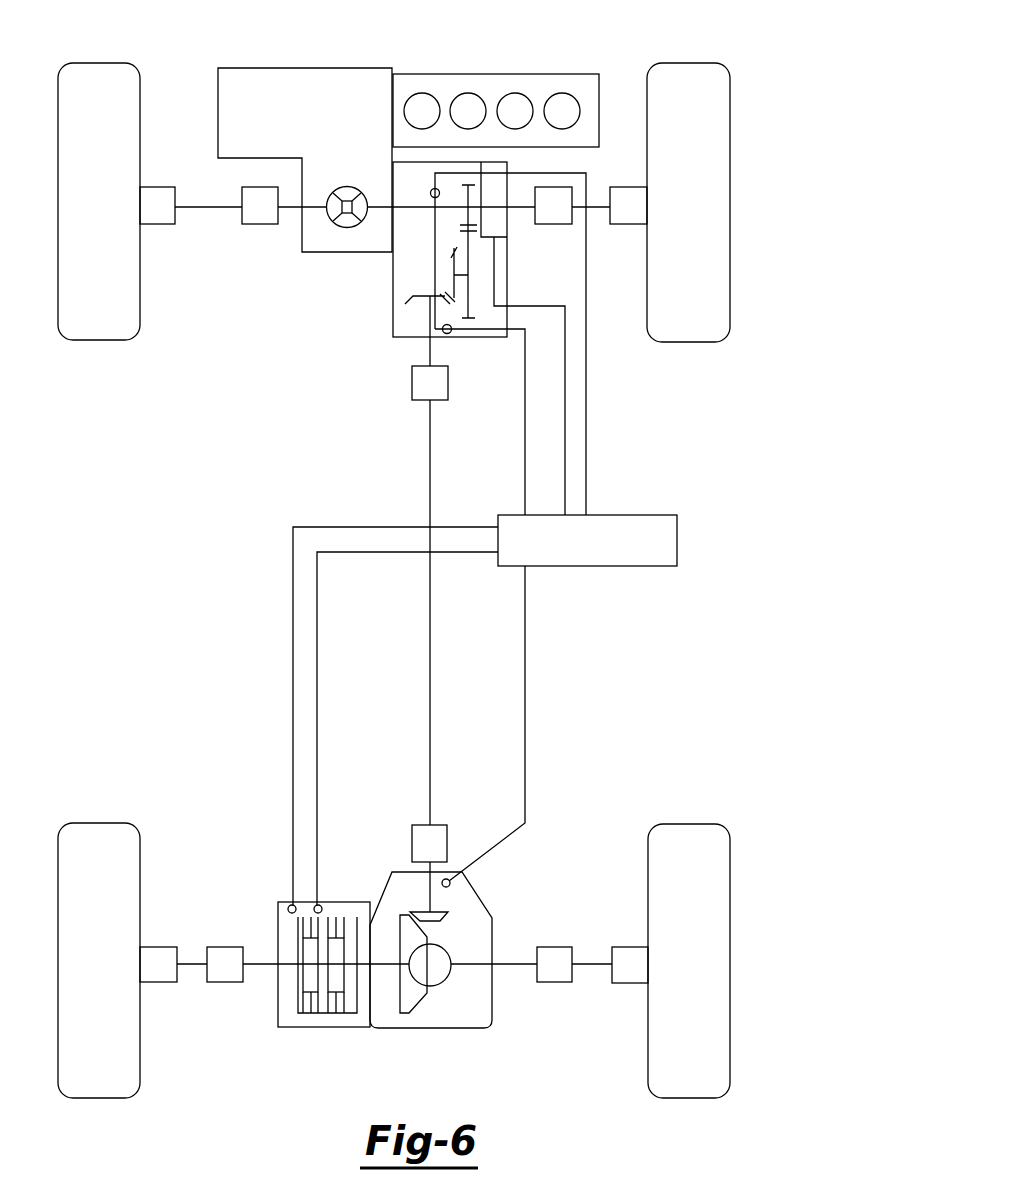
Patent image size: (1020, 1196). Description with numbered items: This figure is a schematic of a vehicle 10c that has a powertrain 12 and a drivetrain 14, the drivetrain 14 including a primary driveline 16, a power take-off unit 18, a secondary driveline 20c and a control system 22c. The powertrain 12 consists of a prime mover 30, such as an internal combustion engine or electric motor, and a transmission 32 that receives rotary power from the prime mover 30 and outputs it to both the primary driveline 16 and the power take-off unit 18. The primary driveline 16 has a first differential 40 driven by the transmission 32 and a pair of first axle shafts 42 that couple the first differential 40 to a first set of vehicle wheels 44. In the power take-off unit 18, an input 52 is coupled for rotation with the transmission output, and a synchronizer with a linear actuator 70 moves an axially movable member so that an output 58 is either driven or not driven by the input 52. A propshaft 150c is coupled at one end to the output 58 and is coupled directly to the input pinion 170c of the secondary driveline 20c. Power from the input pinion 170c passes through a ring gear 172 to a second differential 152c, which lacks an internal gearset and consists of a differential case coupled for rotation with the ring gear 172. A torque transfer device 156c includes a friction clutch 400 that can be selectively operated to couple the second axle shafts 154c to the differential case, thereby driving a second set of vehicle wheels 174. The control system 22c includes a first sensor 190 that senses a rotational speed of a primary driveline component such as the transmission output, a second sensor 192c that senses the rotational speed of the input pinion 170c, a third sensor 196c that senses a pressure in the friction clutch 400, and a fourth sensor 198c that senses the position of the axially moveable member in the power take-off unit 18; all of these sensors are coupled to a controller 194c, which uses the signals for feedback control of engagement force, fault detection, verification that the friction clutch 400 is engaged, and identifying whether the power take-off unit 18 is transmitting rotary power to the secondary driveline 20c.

The vehicle 10c is at (413, 551).
The powertrain 12 is at (406, 257).
The drivetrain 14 is at (533, 677).
The primary driveline 16 is at (402, 220).
The power take-off unit (PTU) 18 is at (472, 326).
The secondary driveline 20c is at (470, 939).
The control system 22c is at (606, 496).
The prime mover 30 is at (450, 74).
The transmission 32 is at (305, 68).
The first differential 40 is at (345, 187).
The first axle shafts 42 is at (204, 207).
The first set of vehicle wheels 44 is at (97, 340).
The input 52 is at (492, 188).
The output 58 is at (425, 352).
The linear actuator 70 is at (505, 248).
The propshaft 150c is at (428, 688).
The second differential 152c is at (450, 980).
The second axle shafts 154c is at (186, 962).
The torque transfer device 156c is at (277, 925).
The input pinion 170c is at (446, 917).
The ring gear 172 is at (407, 1003).
The second set of vehicle wheels 174 is at (97, 823).
The first sensor 190 is at (432, 198).
The second sensor 192c is at (448, 879).
The controller 194c is at (677, 545).
The third sensor 196c is at (320, 905).
The fourth sensor 198c is at (449, 334).
The friction clutch 400 is at (390, 939).